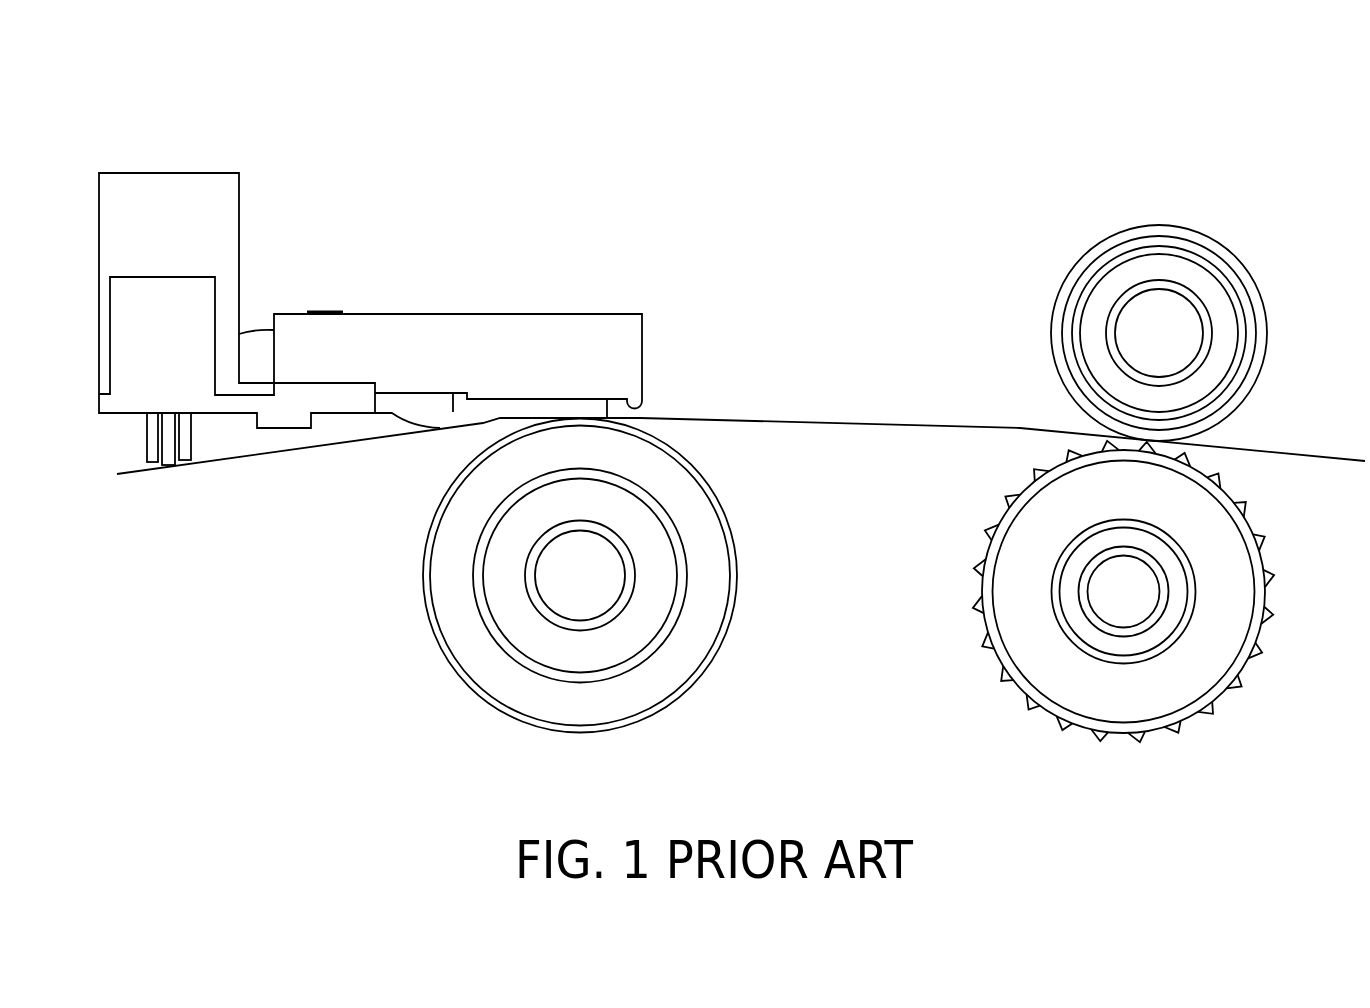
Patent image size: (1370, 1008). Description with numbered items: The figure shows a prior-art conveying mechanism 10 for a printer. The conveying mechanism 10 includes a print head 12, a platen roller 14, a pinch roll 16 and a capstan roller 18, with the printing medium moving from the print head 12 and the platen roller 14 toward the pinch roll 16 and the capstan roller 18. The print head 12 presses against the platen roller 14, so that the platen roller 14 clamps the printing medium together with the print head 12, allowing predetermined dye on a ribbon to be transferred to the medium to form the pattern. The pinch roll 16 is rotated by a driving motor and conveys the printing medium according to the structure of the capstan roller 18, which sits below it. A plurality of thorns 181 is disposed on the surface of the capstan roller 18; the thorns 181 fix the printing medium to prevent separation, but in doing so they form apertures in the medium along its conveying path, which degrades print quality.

The conveying mechanism 10 is at (1152, 112).
The print head 12 is at (568, 313).
The platen roller 14 is at (735, 557).
The pinch roll 16 is at (1057, 298).
The capstan roller 18 is at (988, 550).
The thorns 181 is at (1267, 577).